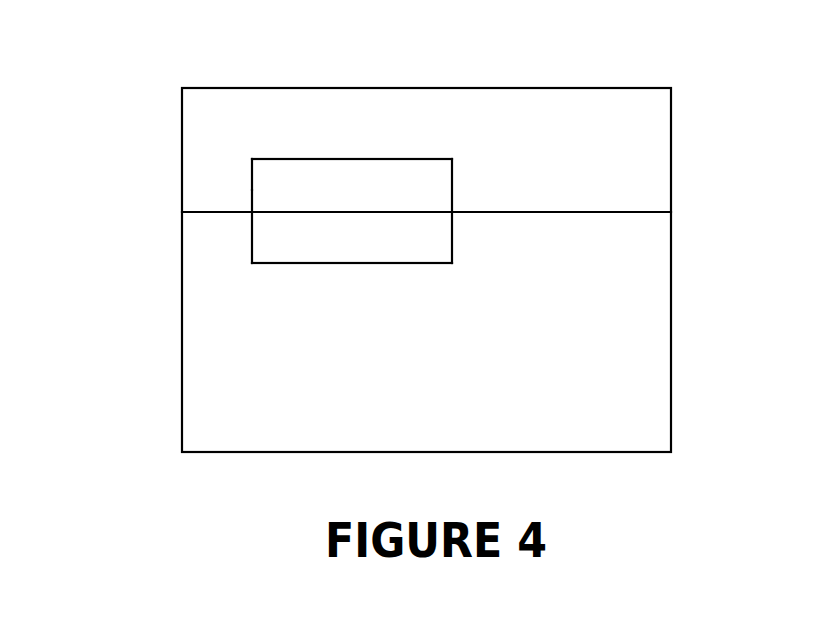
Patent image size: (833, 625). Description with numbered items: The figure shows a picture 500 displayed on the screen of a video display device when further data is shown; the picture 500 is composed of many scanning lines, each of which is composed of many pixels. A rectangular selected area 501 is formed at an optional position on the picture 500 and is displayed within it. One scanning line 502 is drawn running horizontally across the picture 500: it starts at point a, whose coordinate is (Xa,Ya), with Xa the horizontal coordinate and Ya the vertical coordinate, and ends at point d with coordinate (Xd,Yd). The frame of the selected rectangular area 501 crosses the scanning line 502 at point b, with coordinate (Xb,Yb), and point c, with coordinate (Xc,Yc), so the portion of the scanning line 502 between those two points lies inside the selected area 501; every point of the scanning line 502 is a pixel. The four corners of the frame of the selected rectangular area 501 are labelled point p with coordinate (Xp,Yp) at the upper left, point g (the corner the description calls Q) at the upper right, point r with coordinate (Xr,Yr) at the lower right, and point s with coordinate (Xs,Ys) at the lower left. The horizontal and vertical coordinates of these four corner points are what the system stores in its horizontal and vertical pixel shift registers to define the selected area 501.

The picture 500 is at (655, 410).
The selected rectangular area 501 is at (360, 177).
The scanning line 502 is at (555, 212).
The point P p is at (252, 159).
The point Q g is at (452, 159).
The point B b is at (252, 190).
The point C c is at (452, 212).
The point D d is at (730, 190).
The point A a is at (182, 212).
The point S s is at (252, 263).
The point R r is at (452, 263).